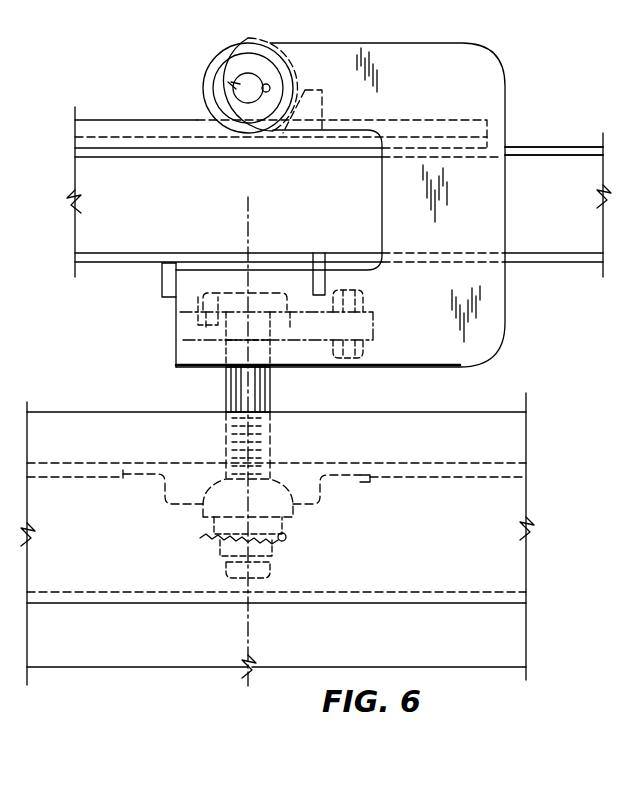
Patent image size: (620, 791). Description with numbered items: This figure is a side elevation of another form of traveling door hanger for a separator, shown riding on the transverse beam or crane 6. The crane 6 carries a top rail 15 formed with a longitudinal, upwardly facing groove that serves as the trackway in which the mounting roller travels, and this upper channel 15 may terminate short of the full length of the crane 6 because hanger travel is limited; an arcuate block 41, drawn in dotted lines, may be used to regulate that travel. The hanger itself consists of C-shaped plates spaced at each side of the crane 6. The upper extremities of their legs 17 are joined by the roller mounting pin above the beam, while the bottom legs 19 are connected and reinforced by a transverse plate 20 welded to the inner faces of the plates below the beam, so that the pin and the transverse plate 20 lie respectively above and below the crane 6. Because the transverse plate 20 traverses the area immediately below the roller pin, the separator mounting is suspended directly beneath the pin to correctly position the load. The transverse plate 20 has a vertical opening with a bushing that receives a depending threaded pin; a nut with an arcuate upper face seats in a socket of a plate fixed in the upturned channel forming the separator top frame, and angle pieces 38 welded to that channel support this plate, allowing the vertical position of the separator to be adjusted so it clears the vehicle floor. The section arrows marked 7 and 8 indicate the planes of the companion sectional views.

The transverse beam or crane 6 is at (554, 242).
The section line 7- 7 is at (233, 197).
The section line 8- 8 is at (140, 313).
The top rail 15 is at (106, 132).
The legs 17 is at (325, 60).
The bottom legs 19 is at (332, 368).
The transverse plate 20 is at (185, 332).
The angle pieces 38 is at (160, 491).
The arcuate block 41 is at (309, 118).